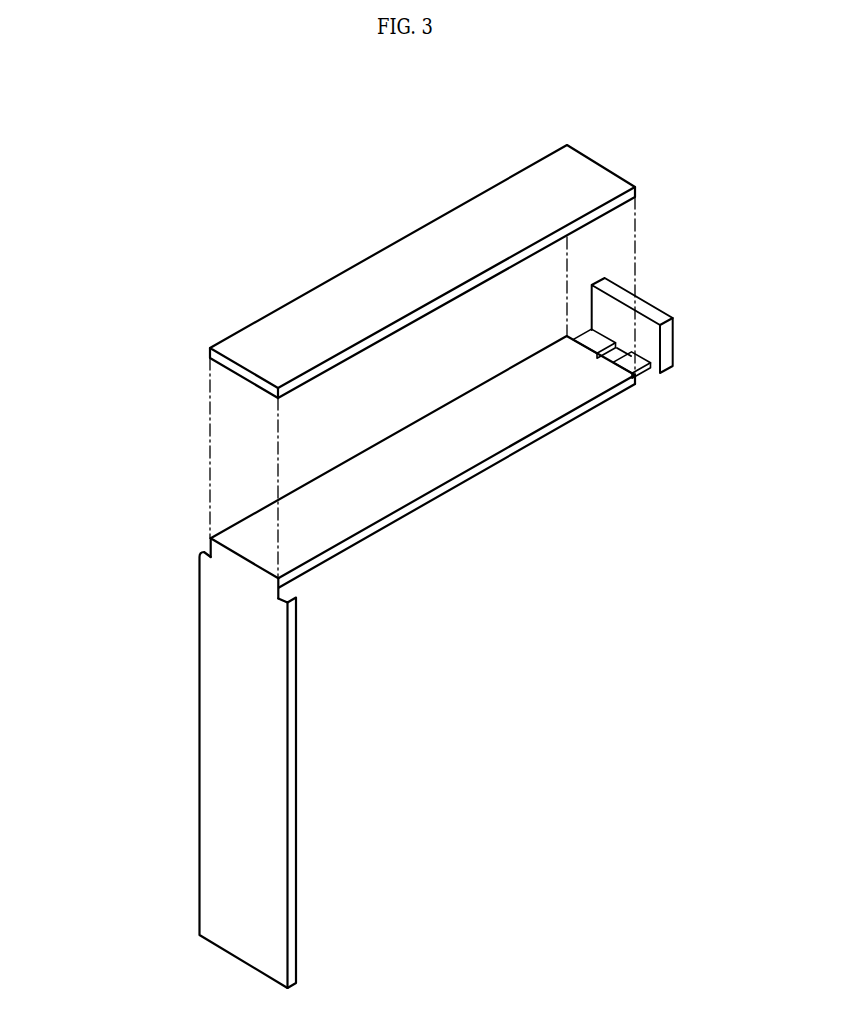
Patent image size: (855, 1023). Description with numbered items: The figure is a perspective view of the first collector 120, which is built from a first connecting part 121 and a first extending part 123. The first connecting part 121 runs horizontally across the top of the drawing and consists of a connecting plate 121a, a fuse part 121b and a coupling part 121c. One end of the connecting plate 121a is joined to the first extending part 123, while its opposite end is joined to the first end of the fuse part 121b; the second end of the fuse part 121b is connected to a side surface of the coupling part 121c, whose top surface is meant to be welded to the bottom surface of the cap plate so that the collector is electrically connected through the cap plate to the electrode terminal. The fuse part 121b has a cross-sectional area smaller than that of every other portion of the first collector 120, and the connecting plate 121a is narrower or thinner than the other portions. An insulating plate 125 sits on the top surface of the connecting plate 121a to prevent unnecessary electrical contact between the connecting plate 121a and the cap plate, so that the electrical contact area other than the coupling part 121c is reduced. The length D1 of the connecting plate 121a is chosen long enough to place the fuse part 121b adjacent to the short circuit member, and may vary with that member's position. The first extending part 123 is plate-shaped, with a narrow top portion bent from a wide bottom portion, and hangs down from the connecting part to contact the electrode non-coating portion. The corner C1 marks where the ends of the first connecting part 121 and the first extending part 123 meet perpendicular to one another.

The first collector 120 is at (405, 566).
The first connecting part 121 is at (494, 438).
The connecting plate 121a is at (580, 395).
The fuse part 121b is at (653, 372).
The coupling part 121c is at (581, 473).
The first extending part 123 is at (215, 737).
The insulating plate 125 is at (302, 302).
The corner C1 is at (206, 547).
The length of the connecting plate D1 is at (172, 522).